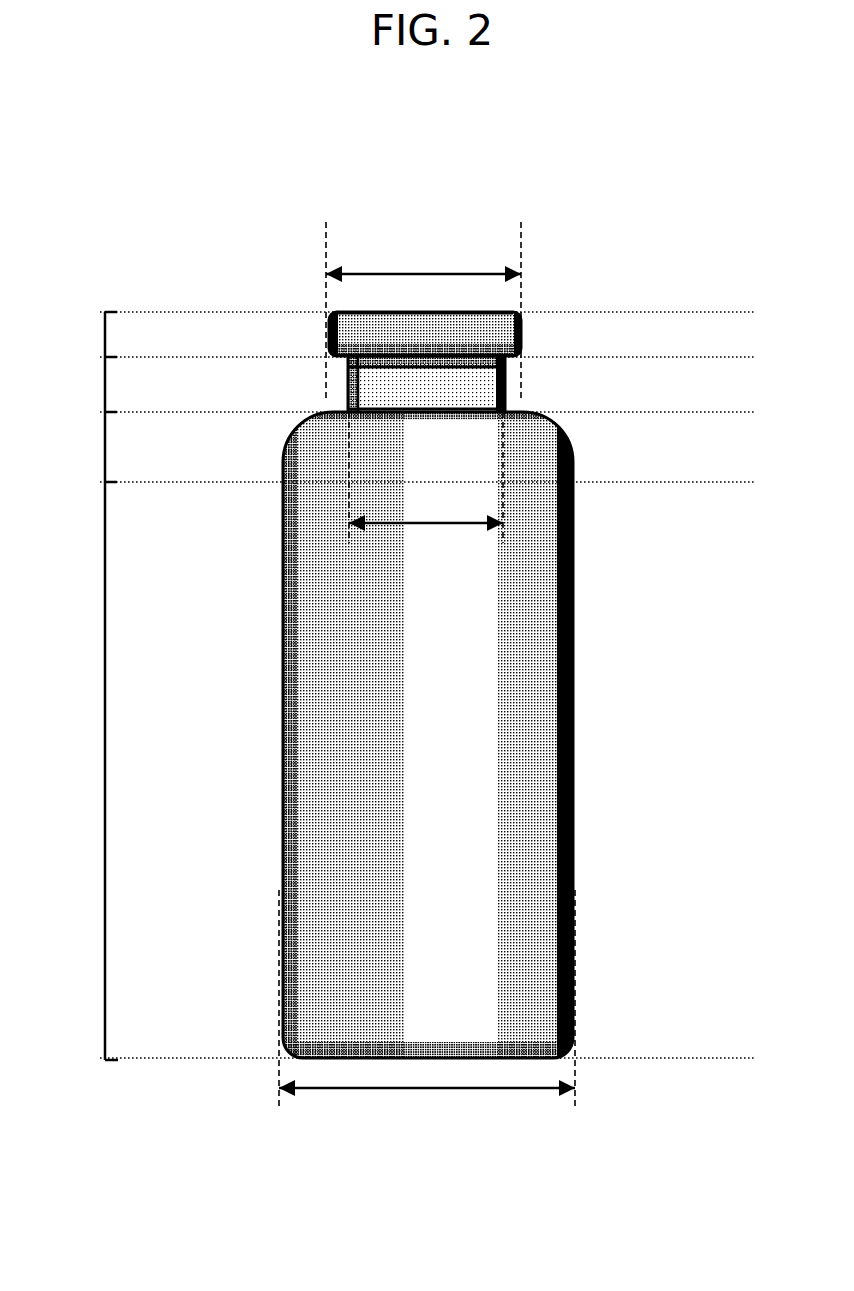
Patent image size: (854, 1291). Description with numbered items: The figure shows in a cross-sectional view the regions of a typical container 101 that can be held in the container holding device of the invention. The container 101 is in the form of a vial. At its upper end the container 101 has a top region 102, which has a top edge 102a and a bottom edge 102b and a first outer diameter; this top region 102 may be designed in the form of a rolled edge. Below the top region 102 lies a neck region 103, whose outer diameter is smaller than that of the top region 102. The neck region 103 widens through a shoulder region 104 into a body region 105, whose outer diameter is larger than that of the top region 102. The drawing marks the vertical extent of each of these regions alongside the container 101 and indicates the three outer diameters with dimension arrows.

The container 101 is at (446, 146).
The top region 102 is at (105, 335).
The top edge 102a is at (357, 313).
The bottom edge 102b is at (512, 358).
The neck region 103 is at (105, 387).
The shoulder region 104 is at (105, 447).
The body region 105 is at (105, 772).